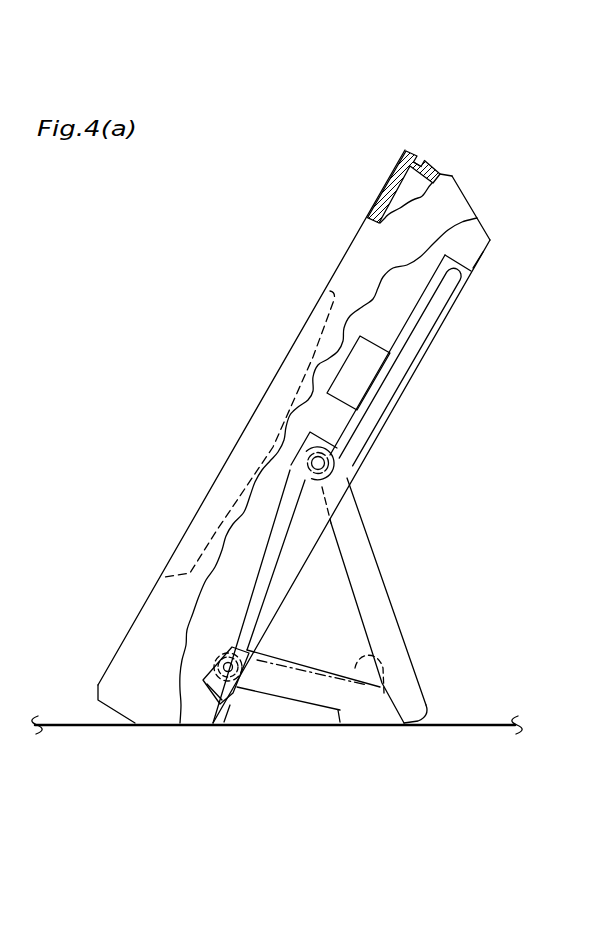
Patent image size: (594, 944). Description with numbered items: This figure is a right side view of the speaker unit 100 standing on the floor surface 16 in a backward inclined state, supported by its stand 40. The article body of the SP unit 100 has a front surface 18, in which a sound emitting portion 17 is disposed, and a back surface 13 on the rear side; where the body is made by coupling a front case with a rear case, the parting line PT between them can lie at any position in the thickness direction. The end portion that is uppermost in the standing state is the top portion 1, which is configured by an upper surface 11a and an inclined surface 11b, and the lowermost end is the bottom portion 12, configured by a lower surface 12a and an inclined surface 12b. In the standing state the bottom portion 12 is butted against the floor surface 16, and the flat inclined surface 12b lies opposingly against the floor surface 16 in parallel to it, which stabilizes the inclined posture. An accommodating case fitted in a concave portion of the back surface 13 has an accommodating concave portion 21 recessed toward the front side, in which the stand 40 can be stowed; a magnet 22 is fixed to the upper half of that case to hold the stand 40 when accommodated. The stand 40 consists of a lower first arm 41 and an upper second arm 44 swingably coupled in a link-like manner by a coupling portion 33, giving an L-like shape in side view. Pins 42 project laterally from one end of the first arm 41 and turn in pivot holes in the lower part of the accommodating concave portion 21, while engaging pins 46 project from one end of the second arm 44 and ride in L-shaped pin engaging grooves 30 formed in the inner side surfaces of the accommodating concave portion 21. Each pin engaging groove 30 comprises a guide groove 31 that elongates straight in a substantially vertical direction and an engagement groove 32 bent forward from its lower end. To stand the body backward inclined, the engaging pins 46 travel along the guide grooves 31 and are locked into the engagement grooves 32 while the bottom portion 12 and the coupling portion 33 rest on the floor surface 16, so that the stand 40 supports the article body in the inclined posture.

The SP unit 100 is at (199, 208).
The main body 1 is at (563, 143).
The upper surface 11a is at (437, 173).
The inclined surface 11b is at (458, 198).
The bottom portion 12 is at (155, 798).
The lower surface 12a is at (108, 706).
The inclined surface 12b is at (160, 724).
The back surface 13 is at (490, 241).
The floor surface 16 is at (468, 724).
The sound emitting portion 17 is at (333, 300).
The front surface 18 is at (358, 229).
The accommodating concave portion 21 is at (413, 313).
The magnet 22 is at (350, 368).
The pin engaging groove 30 is at (468, 446).
The guide groove 31 is at (365, 431).
The engagement groove 32 is at (335, 475).
The coupling portion 33 is at (430, 712).
The stand 40 is at (420, 590).
The first arm 41 is at (338, 712).
The pin 42 is at (230, 648).
The second arm 44 is at (353, 655).
The engaging pin 46 is at (300, 440).
The parting line PT is at (421, 150).